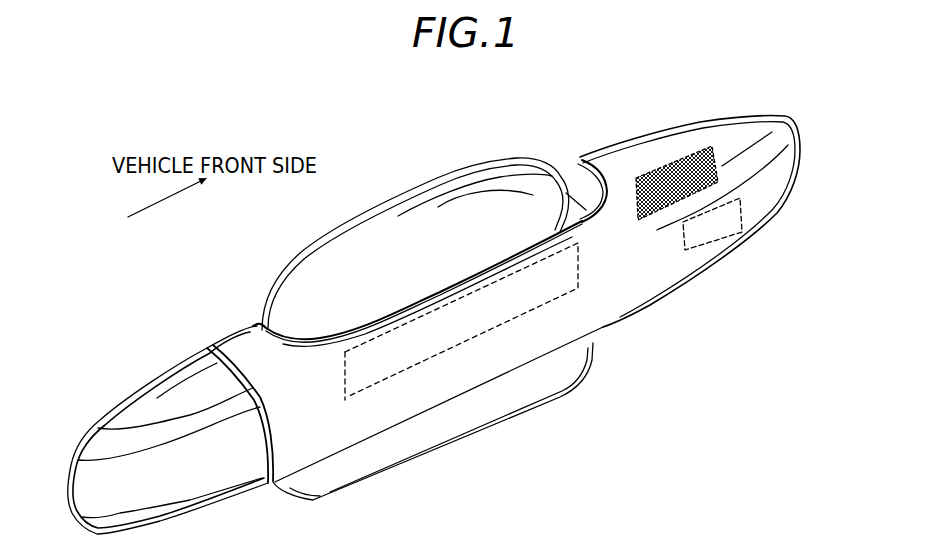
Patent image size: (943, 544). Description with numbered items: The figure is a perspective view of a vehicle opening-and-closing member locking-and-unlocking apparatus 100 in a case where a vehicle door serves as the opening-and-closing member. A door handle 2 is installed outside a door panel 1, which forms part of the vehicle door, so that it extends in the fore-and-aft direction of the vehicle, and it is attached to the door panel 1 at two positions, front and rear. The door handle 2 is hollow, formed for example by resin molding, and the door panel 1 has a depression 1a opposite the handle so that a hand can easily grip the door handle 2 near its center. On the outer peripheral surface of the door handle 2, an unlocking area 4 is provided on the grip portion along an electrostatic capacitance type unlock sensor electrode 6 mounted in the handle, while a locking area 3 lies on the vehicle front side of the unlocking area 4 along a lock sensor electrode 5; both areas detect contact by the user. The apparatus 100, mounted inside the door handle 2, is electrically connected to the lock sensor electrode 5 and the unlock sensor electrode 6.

The door panel 1 is at (487, 155).
The depression 1a is at (384, 222).
The door handle 2 is at (246, 349).
The locking area 3 is at (750, 204).
The unlocking area 4 is at (432, 287).
The lock sensor electrode 5 is at (682, 236).
The unlock sensor electrode 6 is at (344, 379).
The vehicle opening-and-closing member locking-and-unlocking apparatus 100 is at (678, 150).